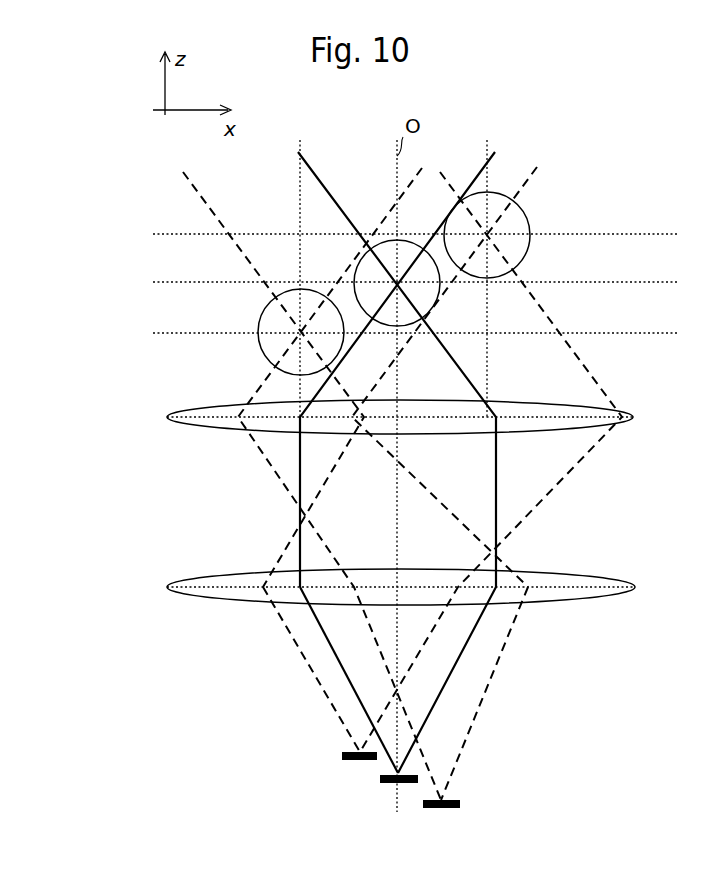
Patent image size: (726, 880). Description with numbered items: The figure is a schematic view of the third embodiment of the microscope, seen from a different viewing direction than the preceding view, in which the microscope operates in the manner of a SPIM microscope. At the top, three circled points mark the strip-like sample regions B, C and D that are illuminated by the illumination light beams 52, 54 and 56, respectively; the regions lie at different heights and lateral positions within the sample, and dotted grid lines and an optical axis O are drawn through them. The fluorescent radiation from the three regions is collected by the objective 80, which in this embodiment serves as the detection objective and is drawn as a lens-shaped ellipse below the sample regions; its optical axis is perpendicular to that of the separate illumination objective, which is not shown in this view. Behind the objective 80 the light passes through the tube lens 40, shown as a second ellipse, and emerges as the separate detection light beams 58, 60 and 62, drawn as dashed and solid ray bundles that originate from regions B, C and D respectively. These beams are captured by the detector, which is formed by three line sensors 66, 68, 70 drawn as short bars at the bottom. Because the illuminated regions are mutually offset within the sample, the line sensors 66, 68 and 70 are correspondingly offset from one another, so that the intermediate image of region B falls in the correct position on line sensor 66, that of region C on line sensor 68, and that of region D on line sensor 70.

The illumination light beam 52 is at (521, 208).
The illumination light beam 54 is at (436, 305).
The illumination light beam 56 is at (264, 353).
The objective 80 is at (638, 421).
The tube lens 40 is at (627, 578).
The detection light beam 58 is at (300, 650).
The detection light beam 60 is at (353, 683).
The detection light beam 62 is at (505, 650).
The line sensor 66 is at (358, 761).
The line sensor 68 is at (396, 784).
The line sensor 70 is at (461, 804).